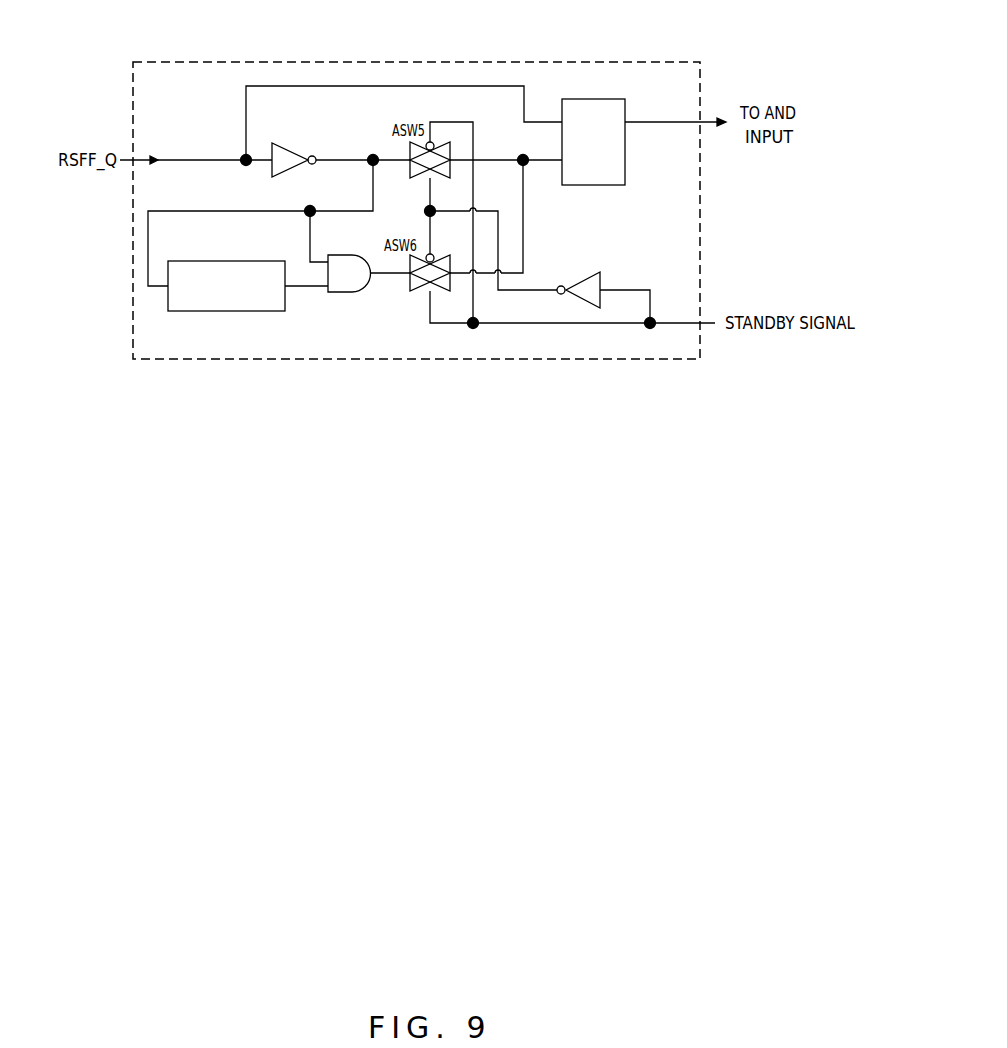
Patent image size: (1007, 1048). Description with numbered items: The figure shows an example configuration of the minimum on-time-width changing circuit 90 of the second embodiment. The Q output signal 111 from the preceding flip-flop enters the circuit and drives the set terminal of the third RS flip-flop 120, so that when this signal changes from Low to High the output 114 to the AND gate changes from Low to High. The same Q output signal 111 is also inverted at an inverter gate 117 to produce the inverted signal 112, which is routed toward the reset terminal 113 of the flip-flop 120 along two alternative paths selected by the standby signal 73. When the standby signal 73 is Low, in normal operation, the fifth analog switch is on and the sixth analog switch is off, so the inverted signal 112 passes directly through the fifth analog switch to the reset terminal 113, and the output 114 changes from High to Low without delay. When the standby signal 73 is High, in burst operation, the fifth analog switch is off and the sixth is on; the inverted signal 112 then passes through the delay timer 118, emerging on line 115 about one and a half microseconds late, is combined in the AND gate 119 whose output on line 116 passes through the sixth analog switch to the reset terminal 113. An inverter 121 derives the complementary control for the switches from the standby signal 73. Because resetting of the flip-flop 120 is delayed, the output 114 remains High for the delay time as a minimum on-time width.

The minimum on-time-width changing circuit 90 is at (178, 62).
The Q output signal (RSFF_Q) 111 is at (382, 135).
The inverted signal 112 is at (263, 221).
The reset terminal (R terminal) 113 is at (503, 214).
The output to the AND gate 114 is at (675, 131).
The delay timer output line 115 is at (306, 298).
The AND gate output line 116 is at (390, 284).
The inverter gate 117 is at (300, 150).
The delay timer 1.5 μs 118 is at (243, 248).
The AND gate 119 is at (340, 255).
The RSFF3 120 is at (597, 185).
The inverter 121 is at (575, 305).
The standby signal 73 is at (652, 295).